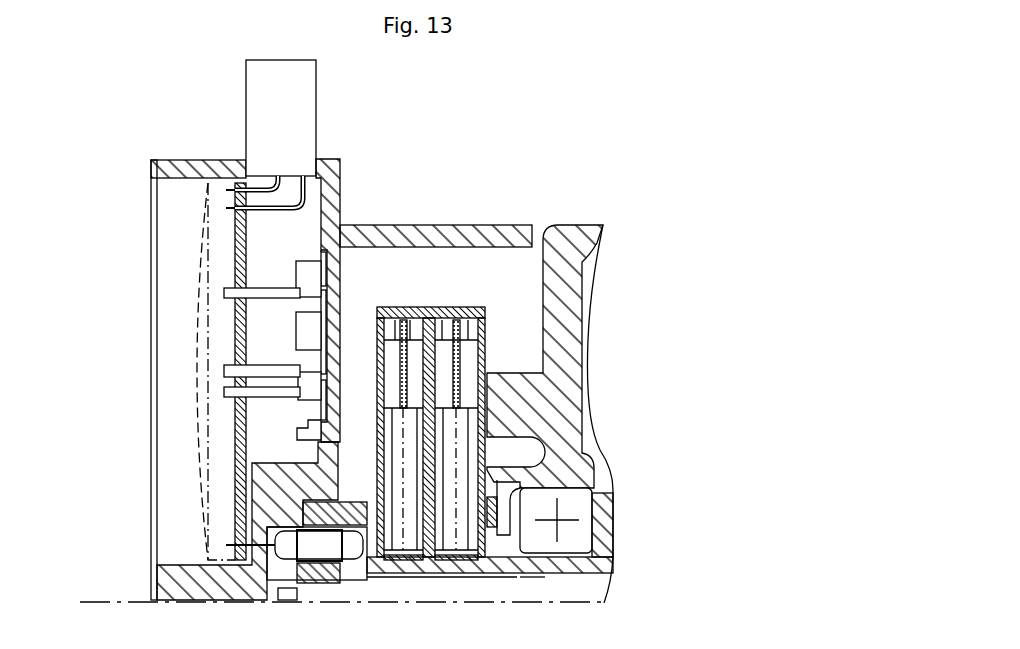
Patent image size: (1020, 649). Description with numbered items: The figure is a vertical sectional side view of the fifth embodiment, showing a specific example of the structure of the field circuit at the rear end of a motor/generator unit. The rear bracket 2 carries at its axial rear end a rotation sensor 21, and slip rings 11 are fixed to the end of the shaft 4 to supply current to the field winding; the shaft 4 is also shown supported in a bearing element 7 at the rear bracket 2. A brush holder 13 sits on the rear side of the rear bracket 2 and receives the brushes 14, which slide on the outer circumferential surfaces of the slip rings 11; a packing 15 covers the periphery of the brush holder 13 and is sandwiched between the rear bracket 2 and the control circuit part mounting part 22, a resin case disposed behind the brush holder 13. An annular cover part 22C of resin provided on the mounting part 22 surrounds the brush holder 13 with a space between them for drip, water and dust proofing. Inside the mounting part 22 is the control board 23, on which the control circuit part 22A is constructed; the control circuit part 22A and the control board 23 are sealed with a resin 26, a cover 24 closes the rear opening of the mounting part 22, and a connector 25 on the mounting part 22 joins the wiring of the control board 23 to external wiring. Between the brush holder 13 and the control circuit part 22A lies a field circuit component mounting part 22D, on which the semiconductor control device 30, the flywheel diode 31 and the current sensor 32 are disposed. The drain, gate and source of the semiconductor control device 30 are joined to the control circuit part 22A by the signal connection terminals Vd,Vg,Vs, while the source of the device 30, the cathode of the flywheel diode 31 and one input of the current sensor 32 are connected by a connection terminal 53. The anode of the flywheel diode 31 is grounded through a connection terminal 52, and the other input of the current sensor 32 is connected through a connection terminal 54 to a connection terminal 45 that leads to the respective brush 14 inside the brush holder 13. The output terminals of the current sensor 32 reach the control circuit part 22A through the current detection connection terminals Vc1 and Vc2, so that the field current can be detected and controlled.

The rear bracket 2 is at (585, 225).
The shaft 4 is at (542, 592).
The bearing 7 is at (592, 570).
The slip rings 11 is at (473, 578).
The brush holder 13 is at (475, 307).
The brushes 14 is at (403, 558).
The packing 15 is at (310, 540).
The rotation sensor 21 is at (298, 570).
The control circuit part mounting part 22 is at (328, 157).
The control circuit part 22A is at (218, 508).
The annular cover part 22C is at (463, 227).
The field circuit component mounting part 22D is at (335, 290).
The control board 23 is at (252, 468).
The cover 24 is at (148, 195).
The connector 25 is at (268, 132).
The resin 26 is at (217, 495).
The semiconductor control device 30 is at (302, 332).
The flywheel diode 31 is at (302, 275).
The current sensor 32 is at (305, 397).
The connection terminal 45 is at (300, 433).
The connection terminal 52 is at (324, 252).
The connection terminal 53 is at (326, 350).
The connection terminal 54 is at (326, 415).
The drain, gate and source signal connection terminals Vd,Vg,Vs is at (223, 290).
The current detection connection terminal Vc1 is at (225, 370).
The current detection connection terminal Vc2 is at (225, 393).